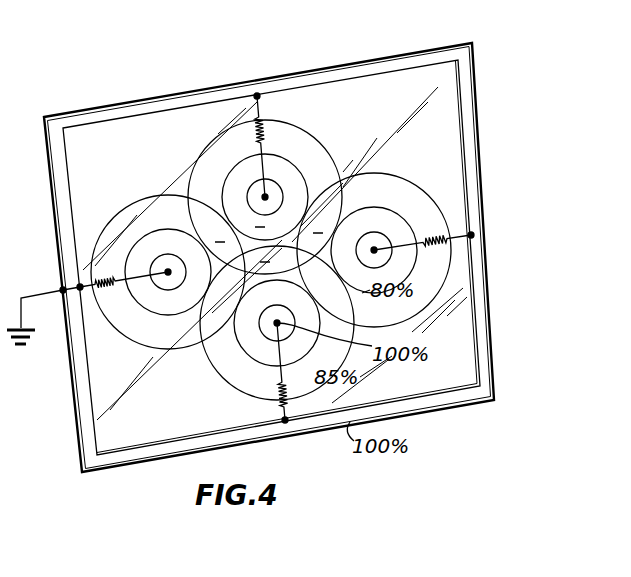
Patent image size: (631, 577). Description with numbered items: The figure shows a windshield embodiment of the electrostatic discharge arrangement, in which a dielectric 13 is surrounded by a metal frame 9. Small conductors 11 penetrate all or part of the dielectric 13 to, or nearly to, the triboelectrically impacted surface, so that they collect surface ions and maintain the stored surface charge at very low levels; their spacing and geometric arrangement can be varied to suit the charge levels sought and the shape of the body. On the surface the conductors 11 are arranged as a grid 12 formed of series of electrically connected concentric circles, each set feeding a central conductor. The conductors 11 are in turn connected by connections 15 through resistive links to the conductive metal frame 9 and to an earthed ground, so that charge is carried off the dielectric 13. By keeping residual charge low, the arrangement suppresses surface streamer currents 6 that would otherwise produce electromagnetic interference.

The metal frame 9 is at (371, 60).
The dielectric 13 is at (369, 122).
The conductors 11 is at (161, 263).
The grid 12 is at (104, 321).
The surface streamer currents 6 is at (290, 236).
The connections 15 is at (73, 283).